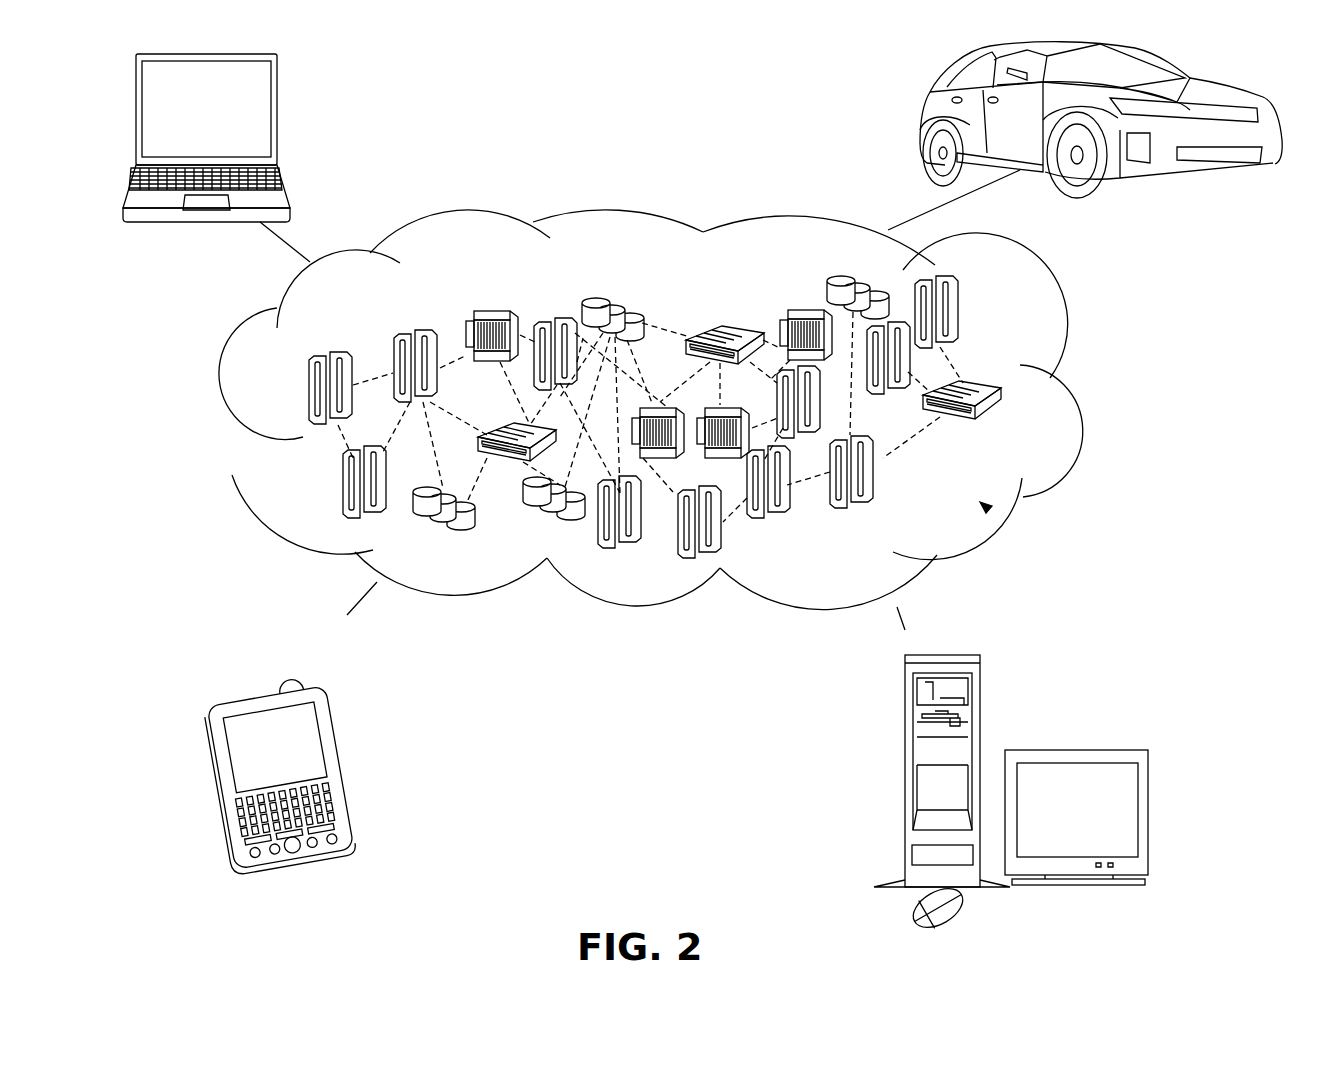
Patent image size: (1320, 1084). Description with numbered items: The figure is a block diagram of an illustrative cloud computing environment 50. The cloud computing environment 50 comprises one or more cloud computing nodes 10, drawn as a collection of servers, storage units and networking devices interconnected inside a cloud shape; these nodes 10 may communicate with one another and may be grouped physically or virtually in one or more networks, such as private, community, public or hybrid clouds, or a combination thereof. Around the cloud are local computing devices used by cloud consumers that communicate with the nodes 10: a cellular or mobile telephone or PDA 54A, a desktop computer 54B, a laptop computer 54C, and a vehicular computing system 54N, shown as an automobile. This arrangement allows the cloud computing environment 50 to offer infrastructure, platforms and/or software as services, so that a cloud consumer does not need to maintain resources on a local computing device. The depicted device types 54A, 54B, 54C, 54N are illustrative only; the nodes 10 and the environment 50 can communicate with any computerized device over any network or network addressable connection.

The cloud computing environment 50 is at (1072, 402).
The cloud computing node 10 is at (986, 510).
The cellular telephone or PDA 54A is at (348, 727).
The desktop computer 54B is at (905, 715).
The laptop computer 54C is at (278, 92).
The vehicular computing system 54N is at (918, 110).